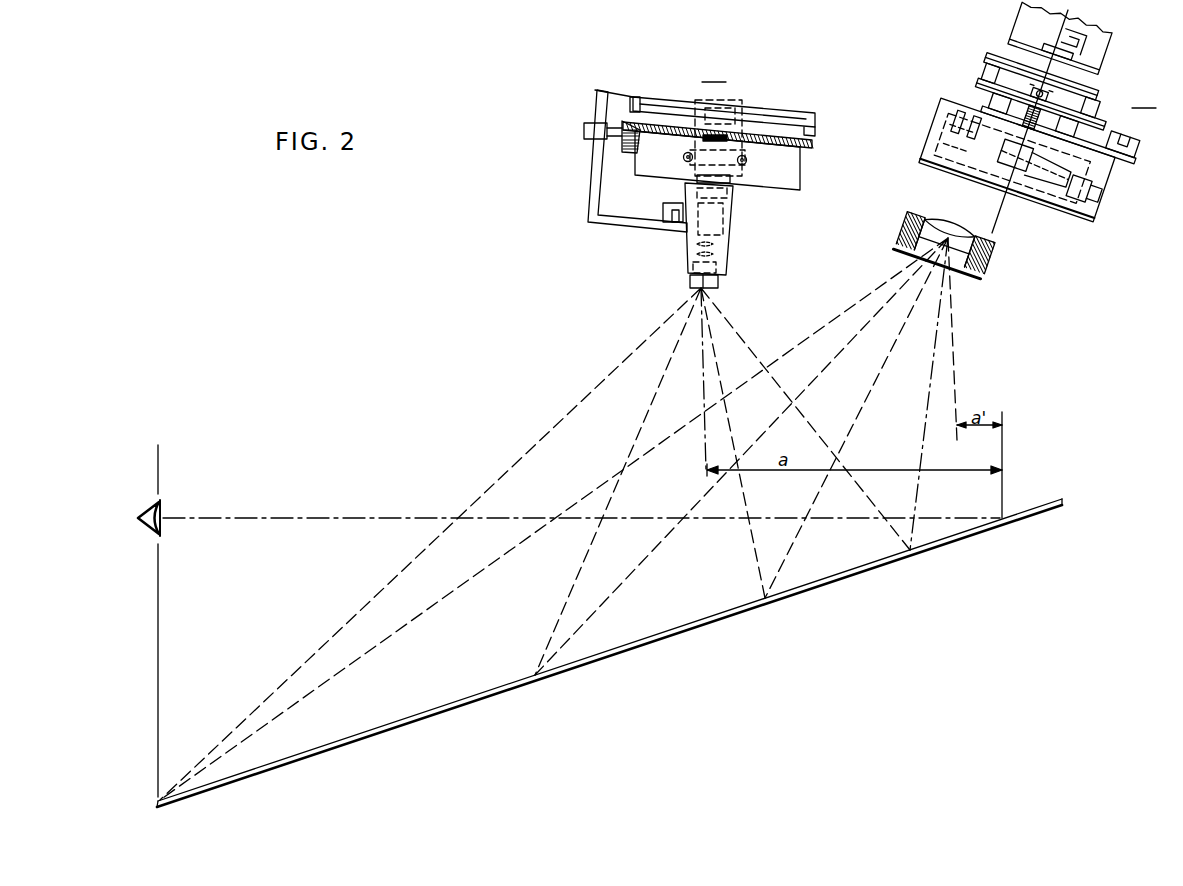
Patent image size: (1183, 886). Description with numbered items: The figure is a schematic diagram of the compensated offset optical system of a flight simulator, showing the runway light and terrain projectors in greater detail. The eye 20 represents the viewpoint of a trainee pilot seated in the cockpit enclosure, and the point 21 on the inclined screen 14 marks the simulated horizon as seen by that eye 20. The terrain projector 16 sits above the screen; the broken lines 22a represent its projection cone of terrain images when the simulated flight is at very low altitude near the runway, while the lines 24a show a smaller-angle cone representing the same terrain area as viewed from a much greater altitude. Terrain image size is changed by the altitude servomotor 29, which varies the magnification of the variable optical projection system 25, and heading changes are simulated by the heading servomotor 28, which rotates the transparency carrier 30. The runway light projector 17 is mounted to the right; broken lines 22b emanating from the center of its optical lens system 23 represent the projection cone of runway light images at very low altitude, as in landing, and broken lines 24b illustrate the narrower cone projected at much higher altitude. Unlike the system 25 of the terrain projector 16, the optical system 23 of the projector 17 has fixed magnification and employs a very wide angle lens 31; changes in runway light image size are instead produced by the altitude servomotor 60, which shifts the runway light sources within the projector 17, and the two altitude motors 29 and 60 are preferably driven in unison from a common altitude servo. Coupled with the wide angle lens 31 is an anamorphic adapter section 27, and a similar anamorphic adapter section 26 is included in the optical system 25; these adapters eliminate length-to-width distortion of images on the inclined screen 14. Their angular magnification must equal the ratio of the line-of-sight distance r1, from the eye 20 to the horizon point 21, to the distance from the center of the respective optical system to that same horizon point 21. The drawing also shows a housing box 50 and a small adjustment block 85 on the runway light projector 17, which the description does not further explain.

The inclined screen 14 is at (1018, 520).
The terrain projector 16 is at (687, 175).
The runway light projector 17 is at (1045, 138).
The eye 20 is at (146, 511).
The horizon point 21 is at (998, 516).
The terrain projection cone lines 22a is at (660, 320).
The runway light projection cone lines 22b is at (887, 300).
The optical lens system 23 is at (992, 258).
The narrower terrain projection cone lines 24a is at (678, 354).
The narrower runway light projection cone lines 24b is at (896, 342).
The optical projection system 25 is at (735, 260).
The anamorphic adapter section 26 is at (697, 253).
The anamorphic adapter section 27 is at (982, 276).
The heading servomotor 28 is at (585, 140).
The altitude servomotor 29 is at (665, 211).
The transparency carrier 30 is at (783, 165).
The wide angle lens 31 is at (940, 222).
The camera housing box 50 is at (1077, 217).
The altitude servomotor 60 is at (1088, 165).
The adjustment block 85 is at (1128, 155).
The horizontal line-of-sight distance r1 is at (316, 518).